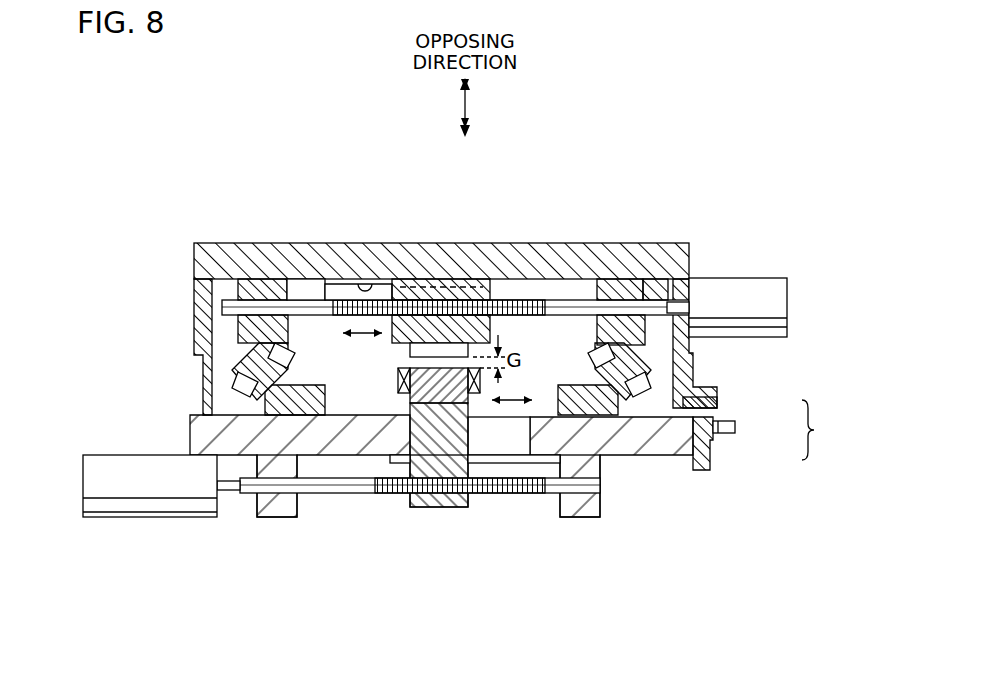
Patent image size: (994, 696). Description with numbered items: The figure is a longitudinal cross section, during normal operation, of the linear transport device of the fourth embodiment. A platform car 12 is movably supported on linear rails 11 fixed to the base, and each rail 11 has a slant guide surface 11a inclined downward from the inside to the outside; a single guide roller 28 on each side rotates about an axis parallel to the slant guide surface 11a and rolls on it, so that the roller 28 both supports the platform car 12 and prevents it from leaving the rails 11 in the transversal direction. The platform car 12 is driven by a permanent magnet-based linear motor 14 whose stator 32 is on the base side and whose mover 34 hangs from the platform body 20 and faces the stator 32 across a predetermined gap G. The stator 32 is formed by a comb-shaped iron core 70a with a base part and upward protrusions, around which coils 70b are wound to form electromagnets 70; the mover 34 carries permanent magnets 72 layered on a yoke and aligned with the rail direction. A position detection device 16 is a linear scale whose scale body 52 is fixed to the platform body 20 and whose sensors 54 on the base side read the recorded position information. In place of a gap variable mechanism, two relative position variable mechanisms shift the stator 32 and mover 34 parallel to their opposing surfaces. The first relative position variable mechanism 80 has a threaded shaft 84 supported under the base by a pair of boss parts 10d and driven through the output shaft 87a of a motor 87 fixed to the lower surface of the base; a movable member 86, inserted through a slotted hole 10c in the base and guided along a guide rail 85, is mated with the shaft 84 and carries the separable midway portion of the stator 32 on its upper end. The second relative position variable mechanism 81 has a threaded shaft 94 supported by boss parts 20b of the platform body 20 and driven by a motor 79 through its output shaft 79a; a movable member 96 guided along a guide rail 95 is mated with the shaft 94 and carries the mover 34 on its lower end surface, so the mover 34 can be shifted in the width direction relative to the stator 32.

The slotted hole 10c is at (497, 434).
The boss parts 10d is at (277, 511).
The linear rail 11 is at (313, 386).
The slant guide surface 11a is at (232, 388).
The platform car 12 is at (500, 245).
The linear motor 14 is at (402, 352).
The position detection device 16 is at (763, 433).
The platform body 20 is at (432, 292).
The boss parts 20b is at (247, 288).
The guide roller 28 is at (236, 368).
The stator 32 is at (482, 470).
The mover 34 is at (328, 294).
The linear scale body 52 is at (718, 405).
The sensor 54 is at (713, 452).
The electromagnet 70 is at (398, 500).
The comb-shaped core 70a is at (412, 408).
The coil 70b is at (388, 370).
The permanent magnet 72 is at (459, 304).
The first motor 79 is at (740, 292).
The motor output shaft 79a is at (690, 301).
The first relative position variable mechanism 80 is at (173, 525).
The second relative position variable mechanism 81 is at (697, 245).
The threaded shaft 84 is at (553, 494).
The guide rail 85 is at (510, 464).
The movable member 86 is at (440, 508).
The motor 87 is at (127, 498).
The output shaft 87a is at (230, 494).
The threaded shaft 94 is at (656, 290).
The guide rail 95 is at (362, 288).
The movable member 96 is at (403, 292).